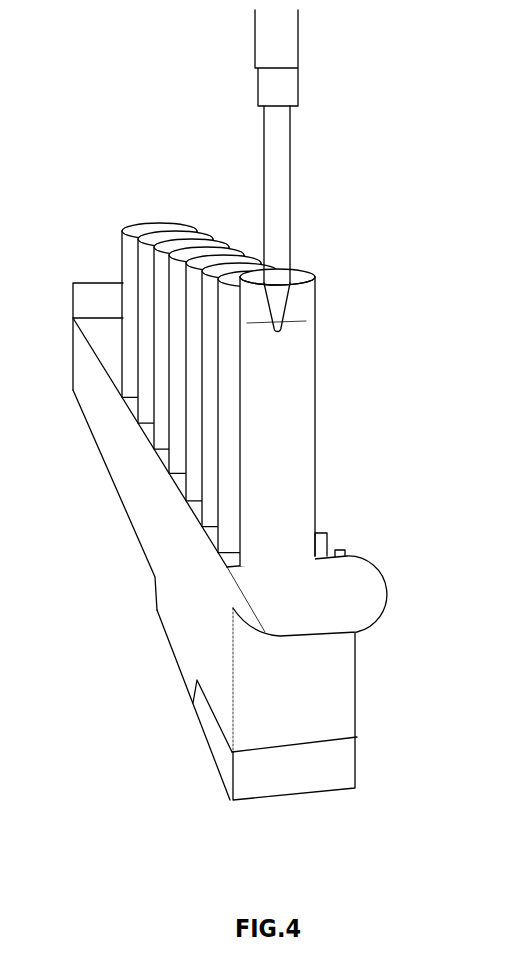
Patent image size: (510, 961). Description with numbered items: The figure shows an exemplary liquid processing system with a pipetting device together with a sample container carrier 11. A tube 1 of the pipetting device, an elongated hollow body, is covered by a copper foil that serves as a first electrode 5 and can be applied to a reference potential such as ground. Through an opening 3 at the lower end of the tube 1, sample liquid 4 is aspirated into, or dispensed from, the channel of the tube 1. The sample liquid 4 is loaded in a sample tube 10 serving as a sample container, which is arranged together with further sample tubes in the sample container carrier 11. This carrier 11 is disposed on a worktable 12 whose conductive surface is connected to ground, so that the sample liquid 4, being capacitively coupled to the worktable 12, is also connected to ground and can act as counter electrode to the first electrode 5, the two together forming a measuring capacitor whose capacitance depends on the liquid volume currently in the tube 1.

The tube 1 is at (276, 153).
The opening 3 is at (283, 332).
The sample liquid 4 is at (285, 394).
The first electrode 5 is at (292, 179).
The sample tube 10 is at (318, 460).
The sample container carrier 11 is at (139, 496).
The worktable 12 is at (103, 605).